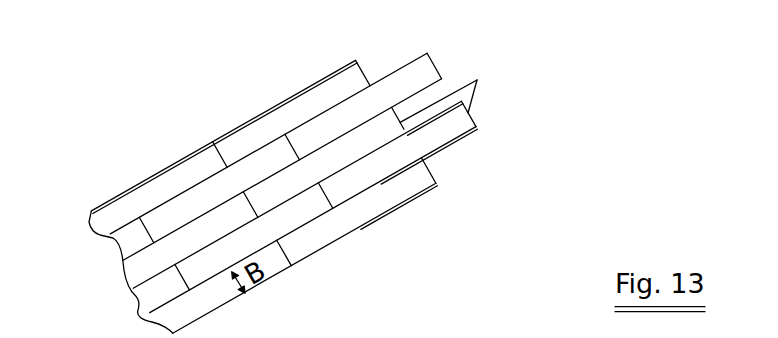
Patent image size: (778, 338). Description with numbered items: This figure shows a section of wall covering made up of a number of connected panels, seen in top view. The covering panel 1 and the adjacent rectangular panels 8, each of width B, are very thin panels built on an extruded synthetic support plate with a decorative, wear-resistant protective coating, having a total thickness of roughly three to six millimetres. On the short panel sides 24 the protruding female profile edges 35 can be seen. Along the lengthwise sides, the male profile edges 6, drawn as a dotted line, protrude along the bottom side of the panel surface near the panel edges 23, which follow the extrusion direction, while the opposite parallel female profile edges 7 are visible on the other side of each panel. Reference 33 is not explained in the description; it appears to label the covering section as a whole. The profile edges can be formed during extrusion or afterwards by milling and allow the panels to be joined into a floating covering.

The covering panel 1 is at (268, 123).
The male profile edge 6 is at (332, 243).
The female profile edge 7 is at (197, 148).
The adjacent rectangular panel 8 is at (398, 78).
The panel edges 23 is at (386, 212).
The short panel sides 24 is at (477, 80).
The sensor arrangement 33 is at (103, 118).
The protruding female profile edges 35 is at (433, 60).